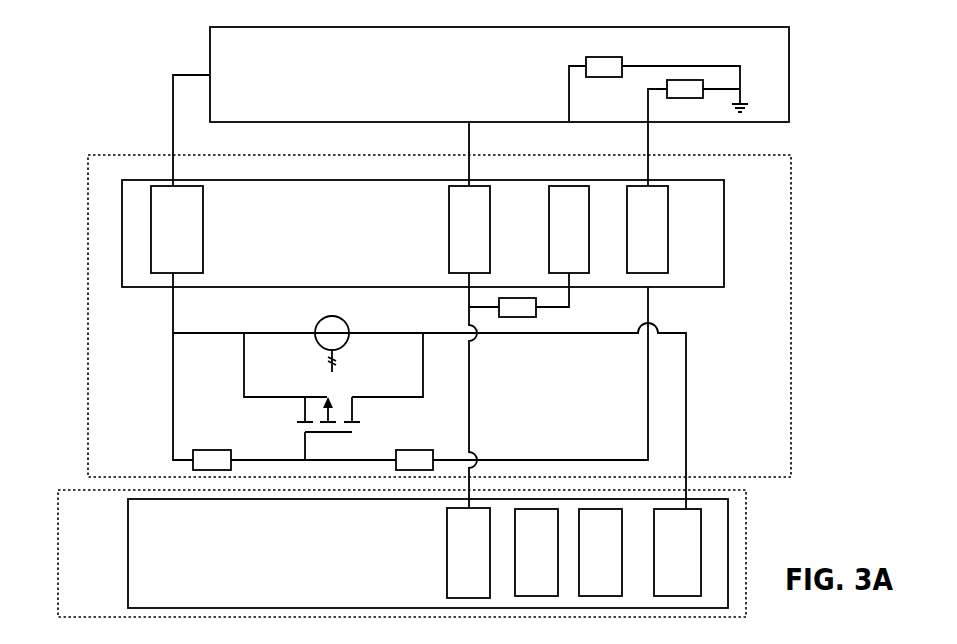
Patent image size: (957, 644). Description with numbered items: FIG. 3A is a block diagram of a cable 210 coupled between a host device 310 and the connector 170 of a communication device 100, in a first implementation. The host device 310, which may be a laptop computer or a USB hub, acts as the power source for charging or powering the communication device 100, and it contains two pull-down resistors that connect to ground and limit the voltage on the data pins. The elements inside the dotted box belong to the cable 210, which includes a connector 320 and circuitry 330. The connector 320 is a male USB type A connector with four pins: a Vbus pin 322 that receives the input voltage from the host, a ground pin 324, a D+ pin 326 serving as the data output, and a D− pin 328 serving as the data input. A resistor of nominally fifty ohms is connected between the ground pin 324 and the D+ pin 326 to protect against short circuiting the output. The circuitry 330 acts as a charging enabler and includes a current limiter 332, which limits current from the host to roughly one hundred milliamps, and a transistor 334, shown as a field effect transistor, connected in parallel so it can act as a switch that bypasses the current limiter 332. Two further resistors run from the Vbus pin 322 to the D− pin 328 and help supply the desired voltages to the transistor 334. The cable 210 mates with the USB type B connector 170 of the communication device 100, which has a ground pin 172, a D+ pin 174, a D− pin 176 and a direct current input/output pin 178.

The communication device 100 is at (75, 481).
The connector 170 is at (142, 545).
The ground (GND) pin 172 is at (468, 553).
The D+ pin 174 is at (536, 552).
The D− pin 176 is at (600, 552).
The direct current input/output (DCIO) pin 178 is at (677, 552).
The cable 210 is at (129, 141).
The host device 310 is at (481, 106).
The connector 320 is at (122, 215).
The Vbus pin 322 is at (177, 229).
The ground (GND) pin 324 is at (469, 229).
The D+ pin 326 is at (569, 229).
The D− pin 328 is at (647, 229).
The circuitry 330 is at (132, 369).
The current limiter 332 is at (304, 317).
The transistor 334 is at (277, 414).